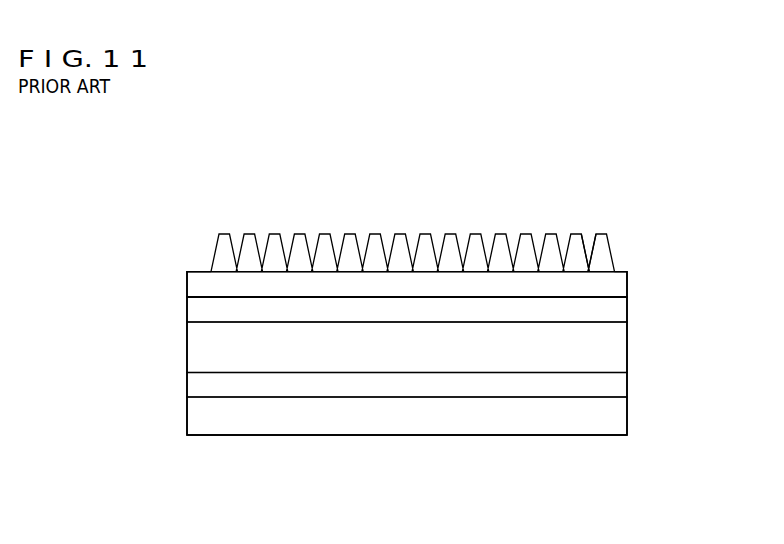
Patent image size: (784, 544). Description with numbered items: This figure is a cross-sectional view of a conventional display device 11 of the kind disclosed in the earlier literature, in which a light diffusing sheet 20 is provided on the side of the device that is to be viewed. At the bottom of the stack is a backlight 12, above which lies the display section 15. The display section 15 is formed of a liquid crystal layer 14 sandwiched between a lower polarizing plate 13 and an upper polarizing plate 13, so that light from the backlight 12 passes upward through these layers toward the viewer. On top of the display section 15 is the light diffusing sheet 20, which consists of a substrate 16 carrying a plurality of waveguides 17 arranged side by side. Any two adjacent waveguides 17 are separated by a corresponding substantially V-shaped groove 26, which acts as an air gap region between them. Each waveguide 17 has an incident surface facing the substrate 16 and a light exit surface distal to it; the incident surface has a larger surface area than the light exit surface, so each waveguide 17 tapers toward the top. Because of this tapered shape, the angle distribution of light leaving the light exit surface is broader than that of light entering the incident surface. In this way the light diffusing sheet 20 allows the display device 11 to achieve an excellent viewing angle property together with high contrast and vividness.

The display device 11 is at (640, 470).
The backlight 12 is at (620, 421).
The polarizing plate 13 is at (620, 313).
The liquid crystal layer 14 is at (620, 349).
The display section 15 is at (683, 300).
The substrate 16 is at (618, 287).
The waveguide 17 is at (603, 254).
The light diffusing sheet 20 is at (682, 243).
The groove 26 is at (596, 229).